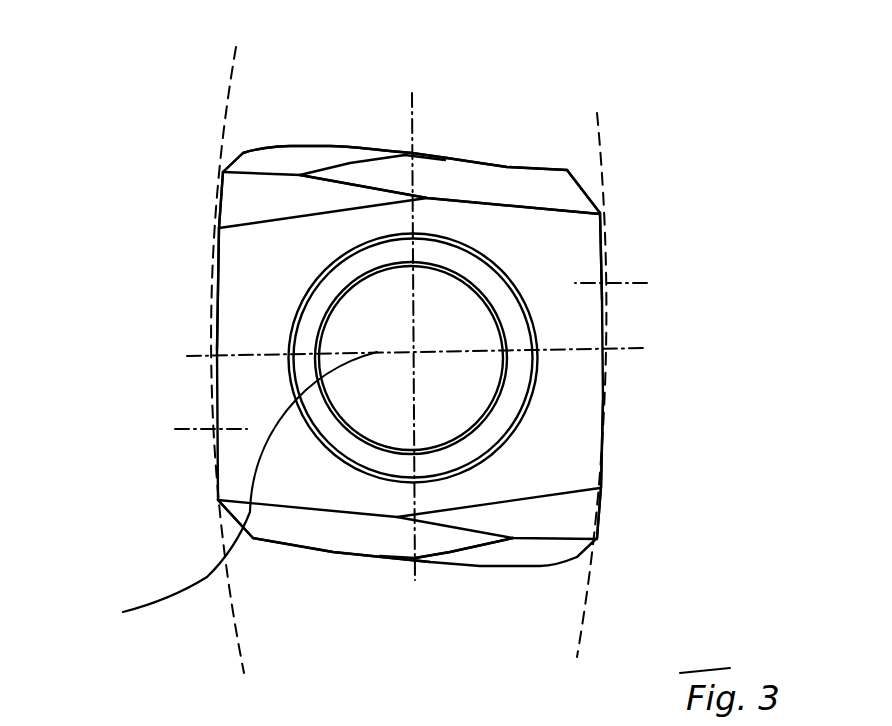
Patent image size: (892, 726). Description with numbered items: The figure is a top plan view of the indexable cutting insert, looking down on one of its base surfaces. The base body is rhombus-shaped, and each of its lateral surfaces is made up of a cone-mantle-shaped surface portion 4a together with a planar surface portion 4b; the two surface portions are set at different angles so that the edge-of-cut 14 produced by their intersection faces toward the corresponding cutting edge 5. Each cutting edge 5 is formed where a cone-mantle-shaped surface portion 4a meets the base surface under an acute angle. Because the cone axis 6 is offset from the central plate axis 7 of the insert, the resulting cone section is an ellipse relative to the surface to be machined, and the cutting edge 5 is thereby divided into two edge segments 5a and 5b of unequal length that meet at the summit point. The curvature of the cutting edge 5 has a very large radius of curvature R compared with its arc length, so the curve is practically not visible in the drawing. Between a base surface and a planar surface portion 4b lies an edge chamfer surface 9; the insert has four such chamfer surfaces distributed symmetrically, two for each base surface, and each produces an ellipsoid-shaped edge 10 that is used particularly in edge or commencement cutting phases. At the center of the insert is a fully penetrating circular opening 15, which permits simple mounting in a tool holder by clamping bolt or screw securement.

The cone-mantle-shaped surface portion 4a is at (327, 155).
The planar surface portion 4b is at (517, 163).
The cutting edge 5 is at (500, 187).
The first edge segment 5a is at (600, 450).
The second edge segment 5b is at (603, 240).
The cone axis 6 is at (647, 283).
The central plate axis 7 is at (632, 346).
The edge chamfer surface 9 is at (283, 185).
The edge 10 is at (218, 206).
The edge-of-cut 14 is at (473, 552).
The circular opening 15 is at (219, 496).
The radius of curvature R is at (608, 163).